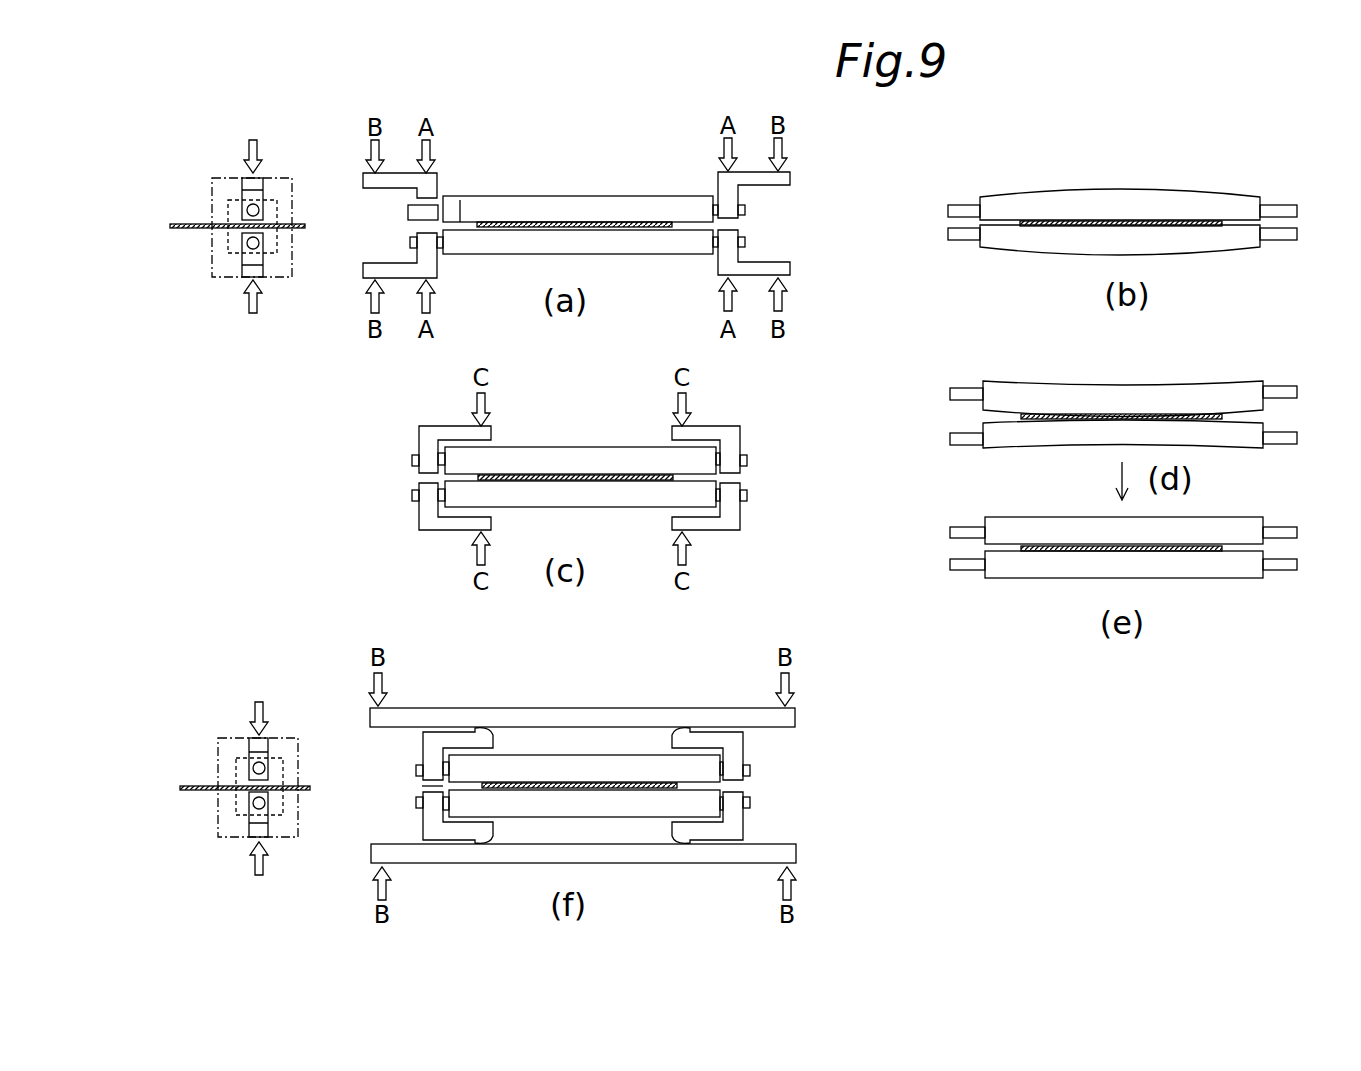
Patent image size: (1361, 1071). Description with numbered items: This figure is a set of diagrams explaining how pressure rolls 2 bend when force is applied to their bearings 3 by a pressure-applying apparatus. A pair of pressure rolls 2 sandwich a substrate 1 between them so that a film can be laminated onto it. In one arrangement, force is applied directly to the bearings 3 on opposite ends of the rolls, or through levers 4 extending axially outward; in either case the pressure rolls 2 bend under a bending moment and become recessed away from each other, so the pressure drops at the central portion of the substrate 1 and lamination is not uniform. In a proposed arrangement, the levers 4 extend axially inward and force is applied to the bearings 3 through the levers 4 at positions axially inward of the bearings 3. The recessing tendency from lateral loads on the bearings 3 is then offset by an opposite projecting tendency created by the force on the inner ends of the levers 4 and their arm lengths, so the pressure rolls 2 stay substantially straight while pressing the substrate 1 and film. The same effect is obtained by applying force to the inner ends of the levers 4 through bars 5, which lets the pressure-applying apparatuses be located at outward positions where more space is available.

The substrate 1 is at (495, 222).
The pressure rolls 2 is at (570, 205).
The bearings 3 is at (430, 178).
The levers 4 is at (392, 176).
The bars 5 is at (590, 712).